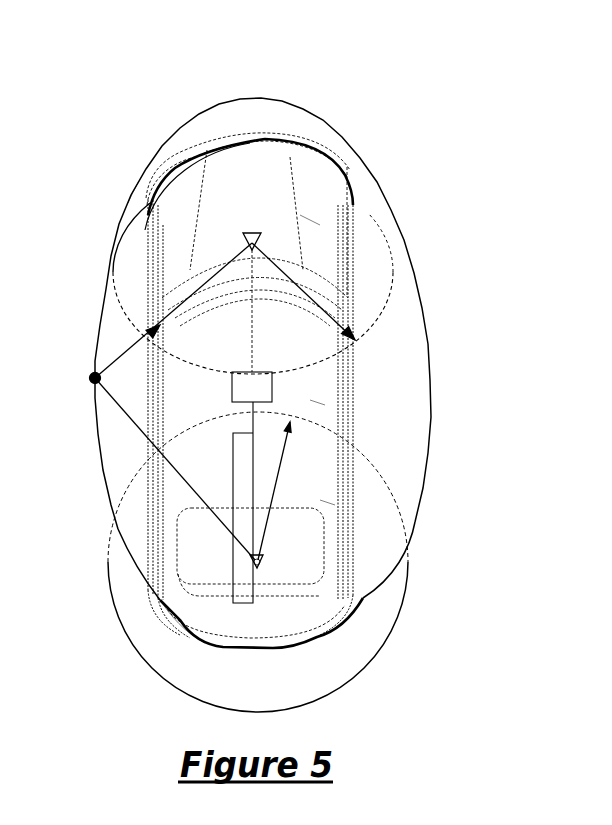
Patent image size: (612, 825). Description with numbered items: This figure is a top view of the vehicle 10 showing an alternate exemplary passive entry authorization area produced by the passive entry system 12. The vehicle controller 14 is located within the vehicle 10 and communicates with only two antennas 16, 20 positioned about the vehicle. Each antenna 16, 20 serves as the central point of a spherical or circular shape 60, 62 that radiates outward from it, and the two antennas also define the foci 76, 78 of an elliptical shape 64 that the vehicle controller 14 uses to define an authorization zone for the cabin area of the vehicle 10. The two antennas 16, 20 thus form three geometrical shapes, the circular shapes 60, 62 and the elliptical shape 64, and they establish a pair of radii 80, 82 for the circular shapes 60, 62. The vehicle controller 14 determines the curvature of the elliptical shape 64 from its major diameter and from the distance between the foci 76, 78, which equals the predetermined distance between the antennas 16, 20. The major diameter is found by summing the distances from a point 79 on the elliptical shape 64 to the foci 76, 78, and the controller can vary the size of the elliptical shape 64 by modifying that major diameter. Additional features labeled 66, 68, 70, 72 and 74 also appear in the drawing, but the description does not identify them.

The vehicle 10 is at (272, 132).
The passive entry system 12 is at (132, 98).
The vehicle controller 14 is at (232, 487).
The antenna 16 is at (247, 233).
The antenna 20 is at (265, 558).
The circular shape 60 is at (112, 238).
The circular shape 62 is at (105, 562).
The elliptical shape 64 is at (96, 435).
The zone boundary 66 is at (132, 177).
The front region 68 is at (317, 218).
The central region 70 is at (325, 397).
The rear region 72 is at (335, 498).
The rear corner region 74 is at (153, 614).
The focus 76 is at (256, 226).
The focus 78 is at (268, 570).
The point 79 is at (92, 378).
The radius 80 is at (315, 305).
The radius 82 is at (270, 510).